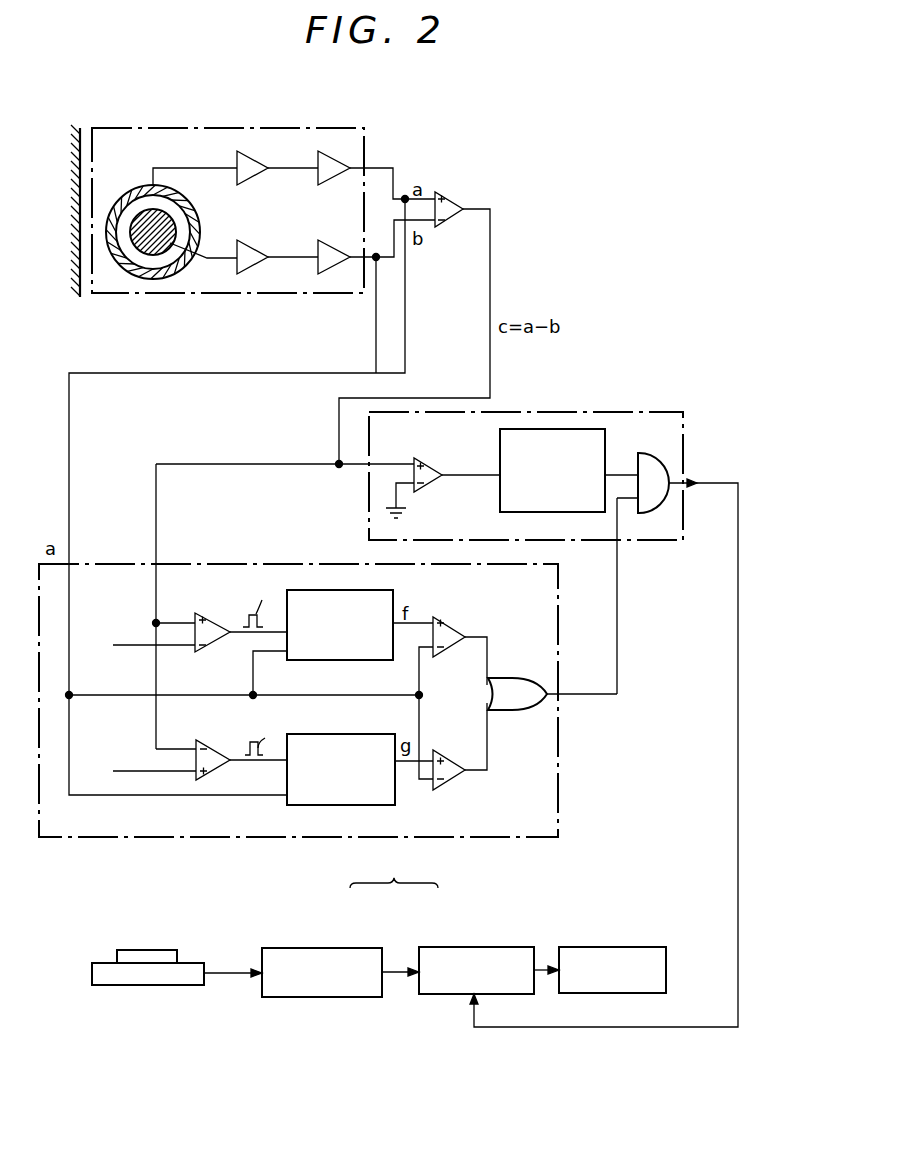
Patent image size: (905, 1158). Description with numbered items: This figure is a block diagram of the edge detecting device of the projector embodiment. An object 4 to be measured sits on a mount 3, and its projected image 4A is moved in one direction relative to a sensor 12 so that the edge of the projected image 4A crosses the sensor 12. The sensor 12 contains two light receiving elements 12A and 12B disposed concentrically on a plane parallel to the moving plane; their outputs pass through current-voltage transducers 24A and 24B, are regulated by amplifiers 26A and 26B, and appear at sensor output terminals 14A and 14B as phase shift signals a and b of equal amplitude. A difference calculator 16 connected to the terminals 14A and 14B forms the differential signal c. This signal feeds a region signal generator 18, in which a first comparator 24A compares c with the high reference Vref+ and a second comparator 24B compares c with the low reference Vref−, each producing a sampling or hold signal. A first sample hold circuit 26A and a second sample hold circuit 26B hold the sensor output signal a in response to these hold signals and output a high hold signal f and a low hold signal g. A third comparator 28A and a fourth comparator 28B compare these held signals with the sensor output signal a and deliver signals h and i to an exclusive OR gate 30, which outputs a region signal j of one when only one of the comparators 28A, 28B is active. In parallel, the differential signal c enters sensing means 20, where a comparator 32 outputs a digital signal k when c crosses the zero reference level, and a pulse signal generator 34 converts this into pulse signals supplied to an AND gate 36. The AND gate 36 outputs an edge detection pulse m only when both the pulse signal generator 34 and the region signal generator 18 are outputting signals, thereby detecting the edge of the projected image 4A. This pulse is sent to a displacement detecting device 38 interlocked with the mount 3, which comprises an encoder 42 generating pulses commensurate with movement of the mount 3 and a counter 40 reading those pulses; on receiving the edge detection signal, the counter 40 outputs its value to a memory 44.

The mount 3 is at (196, 985).
The object to be measured 4 is at (170, 950).
The projected image 4A is at (78, 207).
The sensor 12 is at (206, 128).
The light receiving element 12A is at (140, 190).
The light receiving element 12B is at (174, 268).
The sensor output terminal 14A is at (352, 165).
The sensor output terminal 14B is at (352, 254).
The difference calculator 16 is at (456, 205).
The region signal generator 18 is at (563, 805).
The sensing means 20 is at (585, 412).
The first comparator 24A is at (262, 153).
The second comparator 24B is at (246, 240).
The first sample hold circuit 26A is at (320, 178).
The second sample hold circuit 26B is at (318, 250).
The third comparator 28A is at (445, 617).
The fourth comparator 28B is at (455, 789).
The exclusive OR gate 30 is at (506, 712).
The comparator 32 is at (432, 487).
The pulse signal generator 34 is at (500, 452).
The AND gate 36 is at (655, 455).
The displacement detecting device 38 is at (394, 873).
The counter 40 is at (437, 947).
The encoder 42 is at (362, 948).
The memory 44 is at (612, 947).